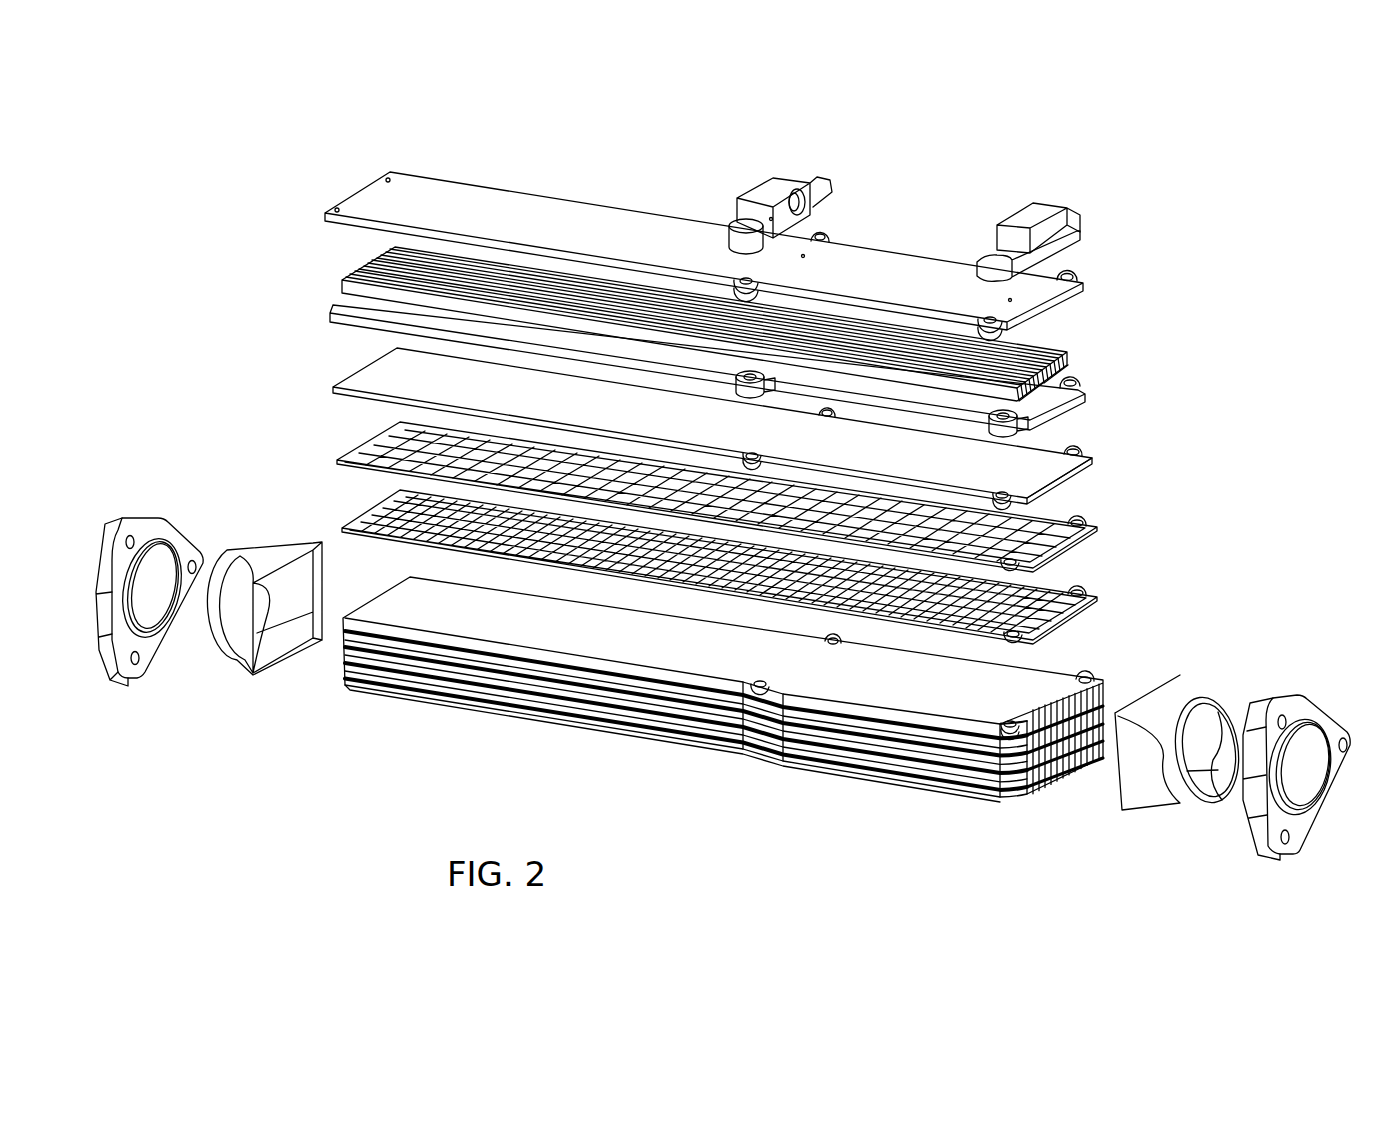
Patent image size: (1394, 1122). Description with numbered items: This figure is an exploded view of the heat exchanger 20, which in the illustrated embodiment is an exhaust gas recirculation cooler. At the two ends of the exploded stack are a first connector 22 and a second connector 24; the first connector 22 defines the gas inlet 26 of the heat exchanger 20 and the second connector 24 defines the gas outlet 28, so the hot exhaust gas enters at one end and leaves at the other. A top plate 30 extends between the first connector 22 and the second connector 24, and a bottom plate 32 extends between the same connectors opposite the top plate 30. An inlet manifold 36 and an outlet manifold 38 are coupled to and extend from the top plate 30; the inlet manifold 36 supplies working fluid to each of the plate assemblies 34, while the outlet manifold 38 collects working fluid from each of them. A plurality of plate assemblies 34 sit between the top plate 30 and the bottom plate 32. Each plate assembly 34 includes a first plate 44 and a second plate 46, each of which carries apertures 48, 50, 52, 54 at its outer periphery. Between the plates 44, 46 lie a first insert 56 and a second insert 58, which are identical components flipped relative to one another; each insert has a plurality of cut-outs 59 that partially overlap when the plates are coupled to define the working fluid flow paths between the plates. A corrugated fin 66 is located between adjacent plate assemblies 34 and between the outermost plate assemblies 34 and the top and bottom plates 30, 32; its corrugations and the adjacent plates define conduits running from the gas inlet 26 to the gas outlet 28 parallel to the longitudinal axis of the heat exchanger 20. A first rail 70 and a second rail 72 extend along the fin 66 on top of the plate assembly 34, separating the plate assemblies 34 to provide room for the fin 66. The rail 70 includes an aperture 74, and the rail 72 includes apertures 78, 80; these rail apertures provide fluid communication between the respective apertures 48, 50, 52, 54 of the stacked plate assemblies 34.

The heat exchanger 20 is at (1048, 101).
The first connector 22 is at (1318, 741).
The second connector 24 is at (156, 591).
The gas inlet 26 is at (1313, 792).
The gas outlet 28 is at (160, 620).
The top plate 30 is at (543, 166).
The bottom plate 32 is at (772, 664).
The plate assemblies 34 is at (1145, 530).
The inlet manifold 36 is at (1040, 206).
The outlet manifold 38 is at (790, 178).
The first plate 44 is at (1032, 447).
The second plate 46 is at (1050, 678).
The aperture 48 is at (1077, 448).
The aperture 50 is at (827, 413).
The aperture 52 is at (755, 456).
The aperture 54 is at (1010, 490).
The first insert 56 is at (701, 525).
The second insert 58 is at (367, 527).
The cut-outs 59 is at (535, 473).
The fin 66 is at (1070, 352).
The first rail 70 is at (746, 367).
The second rail 72 is at (712, 423).
The aperture 74 is at (1073, 380).
The aperture 78 is at (747, 372).
The aperture 80 is at (995, 413).